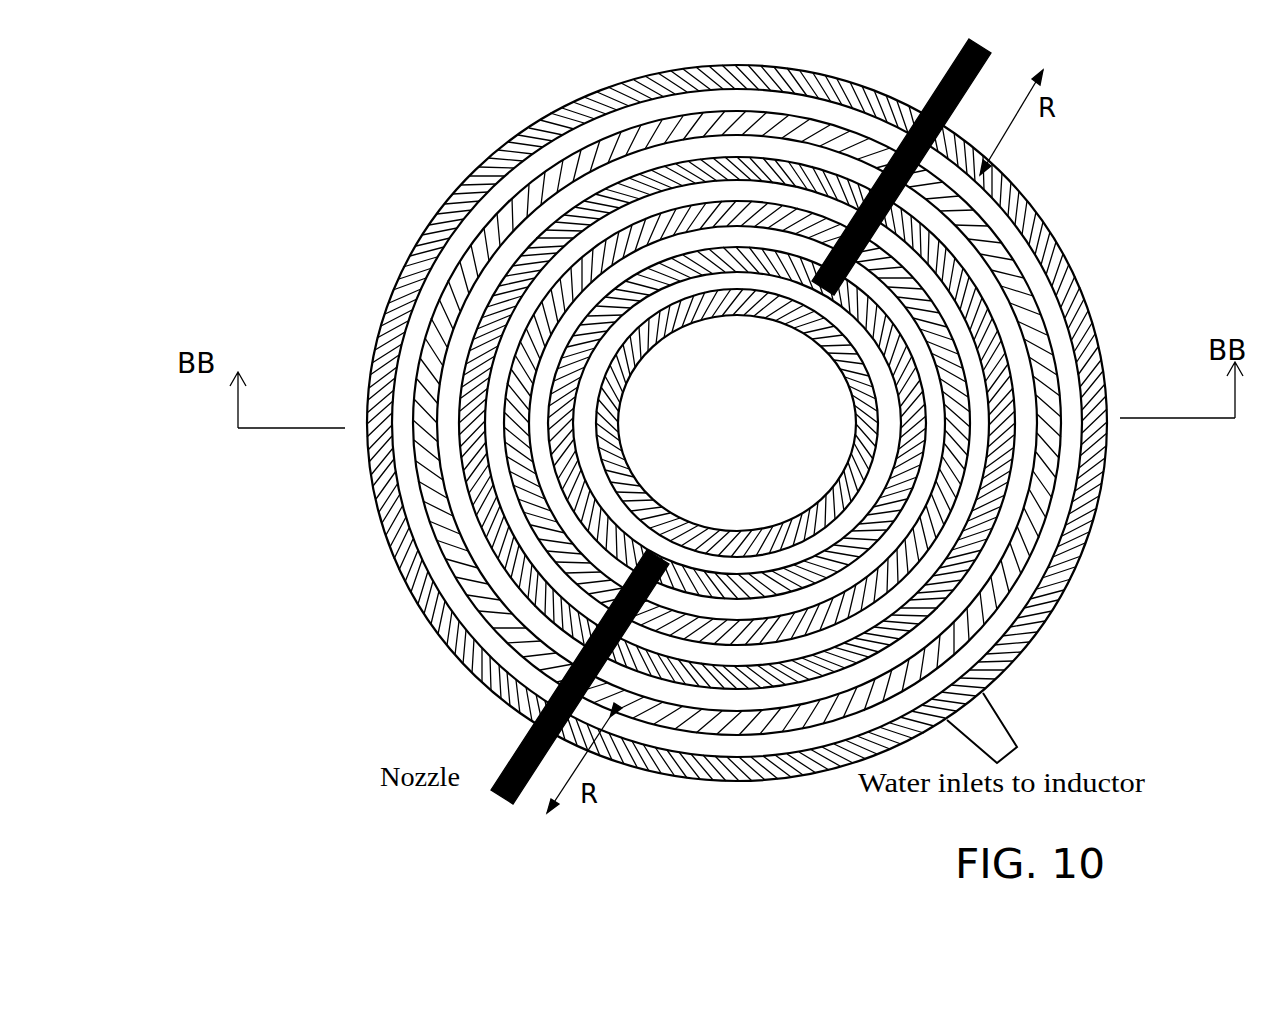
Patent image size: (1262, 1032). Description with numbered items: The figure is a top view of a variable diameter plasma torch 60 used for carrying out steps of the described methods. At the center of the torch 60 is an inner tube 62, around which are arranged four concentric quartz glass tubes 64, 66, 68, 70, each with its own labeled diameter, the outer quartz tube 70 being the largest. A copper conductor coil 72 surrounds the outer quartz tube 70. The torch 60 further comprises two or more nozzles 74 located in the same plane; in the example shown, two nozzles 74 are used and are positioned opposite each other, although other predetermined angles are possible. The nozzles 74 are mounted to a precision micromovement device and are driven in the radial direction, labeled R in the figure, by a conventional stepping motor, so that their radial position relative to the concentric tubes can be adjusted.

The variable diameter torch 60 is at (376, 220).
The inner tube 62 is at (845, 325).
The quartz glass tube 64 is at (907, 362).
The quartz glass tube 66 is at (950, 503).
The quartz glass tube 68 is at (950, 587).
The outer quartz tube 70 is at (950, 648).
The copper conductor coil 72 is at (1000, 205).
The nozzles 74 is at (940, 87).